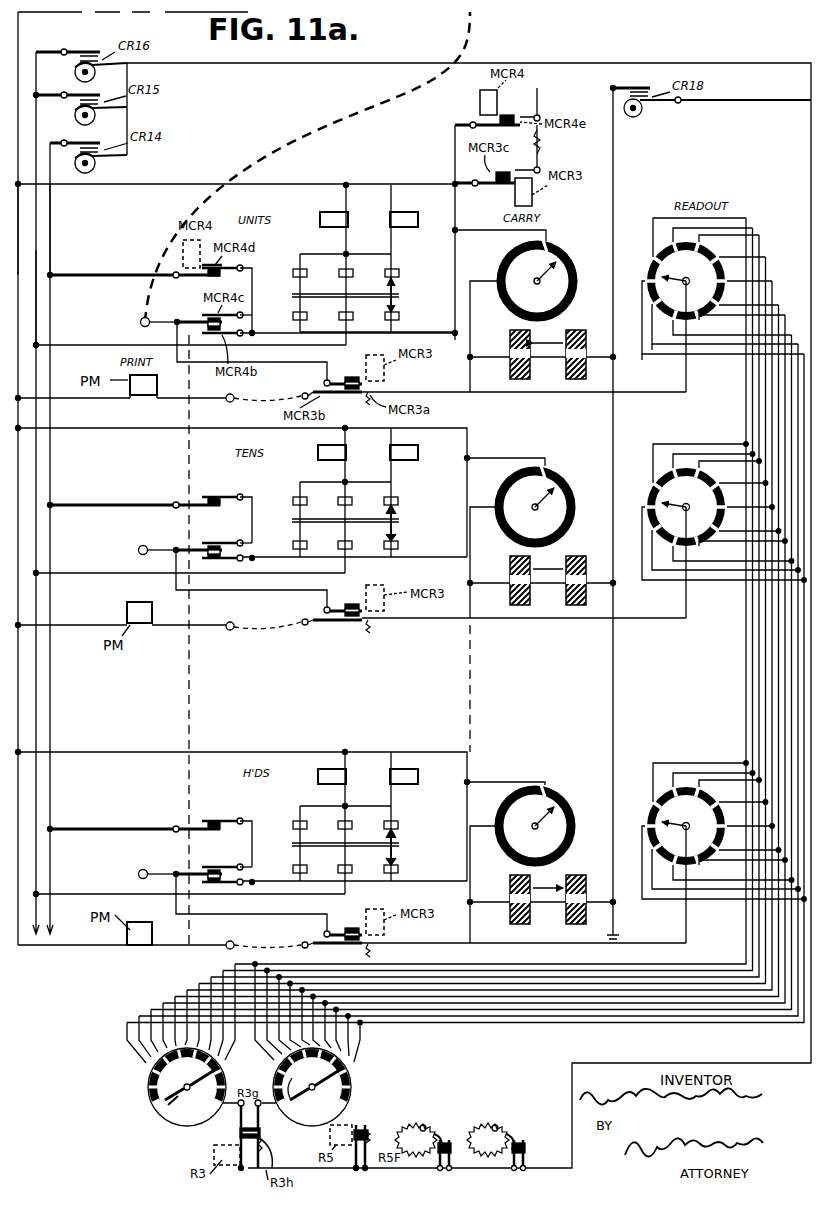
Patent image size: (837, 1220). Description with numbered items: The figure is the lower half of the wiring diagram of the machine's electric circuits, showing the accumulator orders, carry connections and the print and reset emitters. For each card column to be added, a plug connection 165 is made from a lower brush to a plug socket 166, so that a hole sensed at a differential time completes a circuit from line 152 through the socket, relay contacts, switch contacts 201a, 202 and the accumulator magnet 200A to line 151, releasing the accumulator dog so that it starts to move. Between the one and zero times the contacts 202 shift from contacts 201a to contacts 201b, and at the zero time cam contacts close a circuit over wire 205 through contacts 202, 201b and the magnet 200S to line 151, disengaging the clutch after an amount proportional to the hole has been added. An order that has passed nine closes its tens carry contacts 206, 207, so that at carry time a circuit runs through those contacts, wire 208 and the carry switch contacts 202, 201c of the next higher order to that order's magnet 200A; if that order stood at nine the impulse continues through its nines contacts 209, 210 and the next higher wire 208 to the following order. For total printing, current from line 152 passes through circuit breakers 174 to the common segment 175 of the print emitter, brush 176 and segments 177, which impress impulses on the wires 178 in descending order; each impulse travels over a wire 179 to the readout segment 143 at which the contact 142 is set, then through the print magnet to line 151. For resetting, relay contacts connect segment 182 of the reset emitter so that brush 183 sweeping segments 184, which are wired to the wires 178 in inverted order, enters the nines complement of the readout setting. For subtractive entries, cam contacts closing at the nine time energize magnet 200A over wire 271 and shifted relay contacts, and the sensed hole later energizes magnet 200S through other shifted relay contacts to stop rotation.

The readout contact 142 is at (684, 553).
The readout segment 143 is at (722, 272).
The line 151 is at (18, 190).
The line 152 is at (811, 128).
The plug connection 165 is at (300, 125).
The plug socket 166 is at (141, 320).
The circuit breakers 174 is at (510, 1157).
The common segment 175 is at (345, 1110).
The brush 176 is at (301, 1082).
The segments 177 is at (352, 1062).
The wires 178 is at (798, 968).
The wire 179 is at (744, 352).
The segment 182 is at (170, 1120).
The emitter brush 183 is at (170, 1104).
The segments 184 is at (145, 1073).
The magnet 200S is at (328, 212).
The accumulator magnet 200A is at (405, 220).
The switch contacts 201a is at (399, 316).
The switch contacts 201b is at (350, 281).
The switch contacts 201c is at (305, 280).
The switch contacts 202 is at (392, 300).
The wire 205 is at (36, 310).
The tens carry contacts 206 is at (552, 338).
The tens carry contacts 207 is at (562, 356).
The wire 208 is at (472, 720).
The nines contacts 209 is at (538, 240).
The nines contacts 210 is at (546, 276).
The wire 271 is at (52, 250).